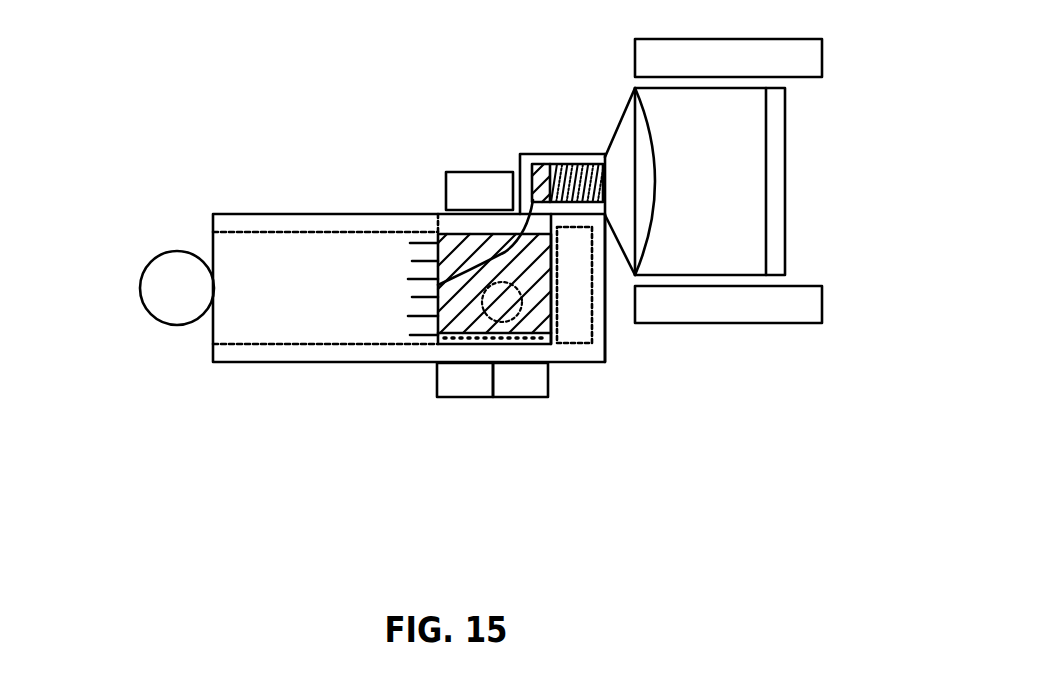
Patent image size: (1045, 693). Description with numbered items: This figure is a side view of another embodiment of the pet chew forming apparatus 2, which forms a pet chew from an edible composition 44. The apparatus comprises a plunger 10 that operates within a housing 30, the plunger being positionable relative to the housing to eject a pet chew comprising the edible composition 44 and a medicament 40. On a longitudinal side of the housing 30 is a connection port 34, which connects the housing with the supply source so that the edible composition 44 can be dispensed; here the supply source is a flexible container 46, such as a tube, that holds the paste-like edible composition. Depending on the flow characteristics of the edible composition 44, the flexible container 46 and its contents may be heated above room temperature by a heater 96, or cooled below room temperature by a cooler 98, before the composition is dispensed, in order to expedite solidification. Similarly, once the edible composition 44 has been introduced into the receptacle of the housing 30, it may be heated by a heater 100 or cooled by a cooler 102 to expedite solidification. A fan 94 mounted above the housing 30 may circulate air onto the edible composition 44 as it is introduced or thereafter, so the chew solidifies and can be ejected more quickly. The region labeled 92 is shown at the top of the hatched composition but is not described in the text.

The pet chew forming apparatus 2 is at (163, 104).
The plunger 10 is at (180, 346).
The housing 30 is at (250, 194).
The connection port 34 is at (558, 157).
The medicament 40 is at (535, 313).
The edible composition 44 is at (463, 290).
The flexible container 46 is at (700, 189).
The gap 92 is at (445, 220).
The fan 94 is at (473, 190).
The heater 96 is at (808, 59).
The cooler 98 is at (802, 303).
The heater 100 is at (465, 377).
The cooler 102 is at (520, 388).